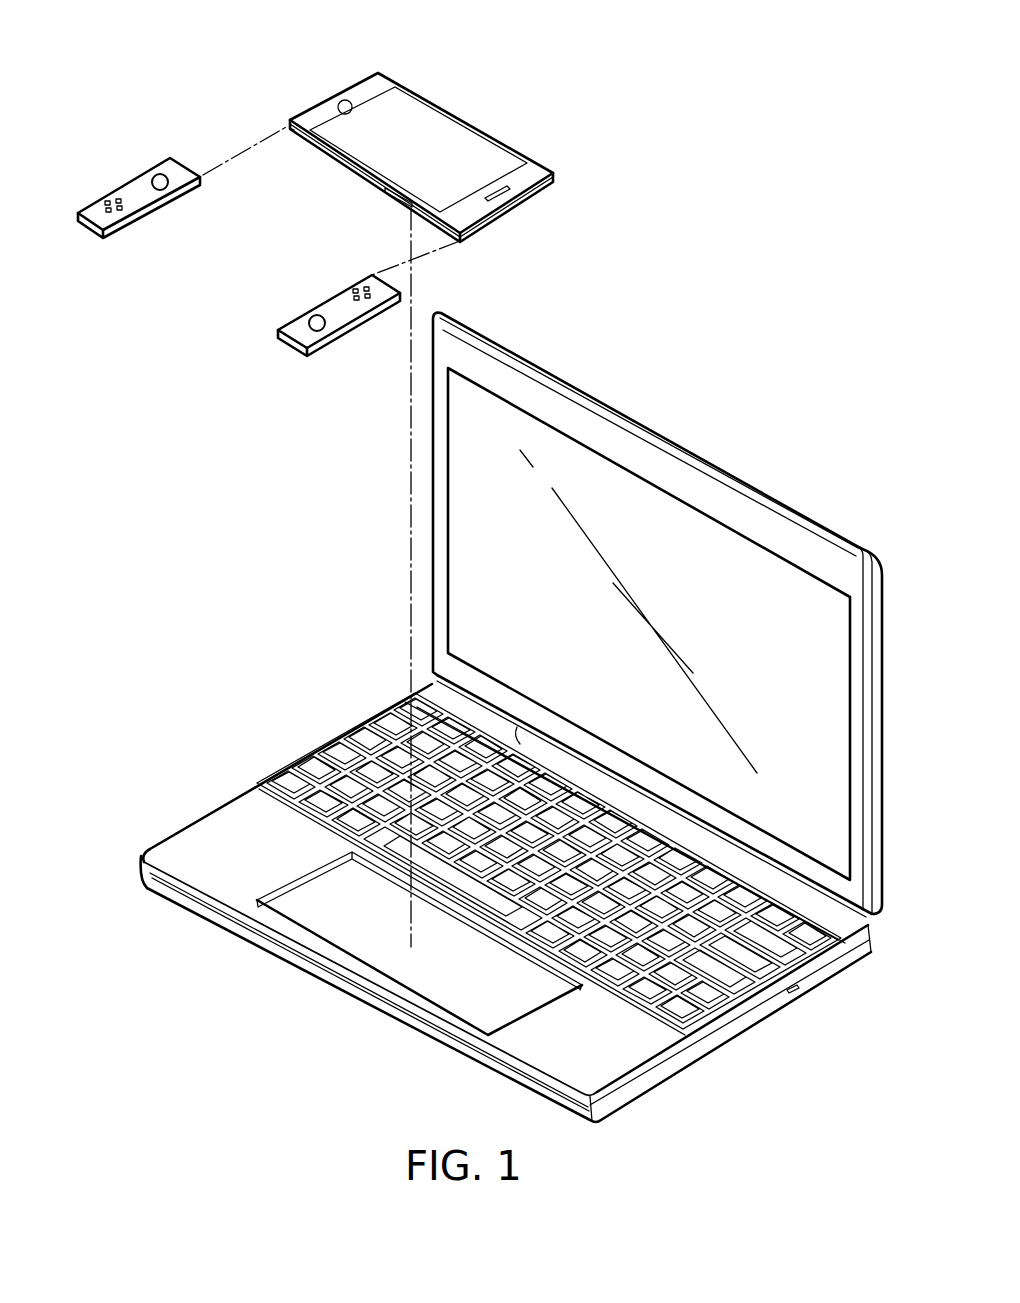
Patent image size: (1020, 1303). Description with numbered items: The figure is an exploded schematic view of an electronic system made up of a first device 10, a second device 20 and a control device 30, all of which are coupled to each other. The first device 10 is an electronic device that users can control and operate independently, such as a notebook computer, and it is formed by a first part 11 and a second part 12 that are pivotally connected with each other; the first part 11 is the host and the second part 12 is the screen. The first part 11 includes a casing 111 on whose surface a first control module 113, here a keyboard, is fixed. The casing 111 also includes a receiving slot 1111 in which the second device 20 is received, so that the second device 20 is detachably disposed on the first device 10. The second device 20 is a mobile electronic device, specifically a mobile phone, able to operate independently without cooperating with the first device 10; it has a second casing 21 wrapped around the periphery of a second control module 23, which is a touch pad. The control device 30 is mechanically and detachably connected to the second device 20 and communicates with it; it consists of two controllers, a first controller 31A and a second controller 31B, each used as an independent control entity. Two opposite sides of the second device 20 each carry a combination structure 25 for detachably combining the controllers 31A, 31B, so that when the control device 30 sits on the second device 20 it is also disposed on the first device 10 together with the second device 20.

The first device 10 is at (374, 537).
The first part 11 is at (403, 700).
The second part 12 is at (424, 558).
The casing 111 is at (640, 1053).
The first control module 113 is at (322, 750).
The receiving slot 1111 is at (407, 975).
The second device 20 is at (362, 68).
The second casing 21 is at (417, 94).
The second control module 23 is at (453, 120).
The combination structure 25 is at (288, 131).
The control device 30 is at (192, 376).
The first controller 31A is at (93, 234).
The second controller 31B is at (277, 336).